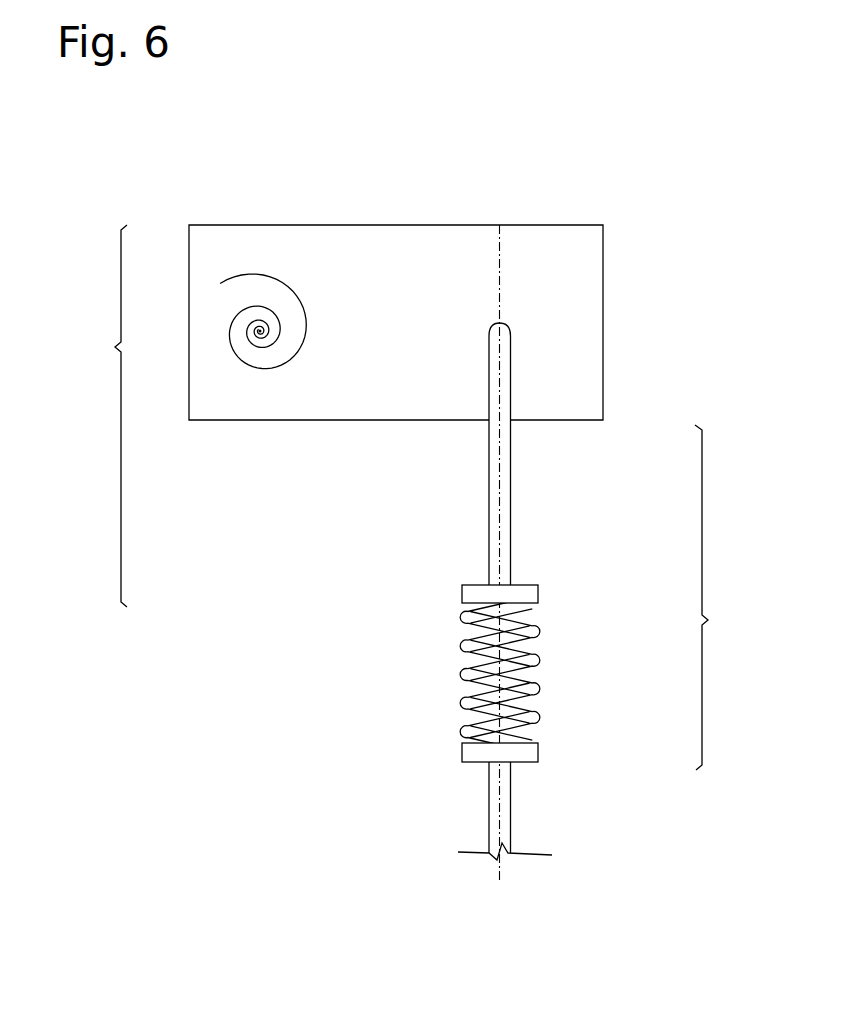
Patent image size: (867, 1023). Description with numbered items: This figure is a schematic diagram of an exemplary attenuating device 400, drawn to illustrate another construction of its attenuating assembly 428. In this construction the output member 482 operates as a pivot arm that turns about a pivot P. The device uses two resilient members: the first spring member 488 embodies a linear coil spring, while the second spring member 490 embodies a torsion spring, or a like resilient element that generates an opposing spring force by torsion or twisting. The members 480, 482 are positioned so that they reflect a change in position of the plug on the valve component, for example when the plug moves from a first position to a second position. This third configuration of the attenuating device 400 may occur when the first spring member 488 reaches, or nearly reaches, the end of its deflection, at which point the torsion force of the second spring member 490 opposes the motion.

The attenuating device 400 is at (640, 128).
The output member 482 is at (445, 224).
The second spring member 490 is at (272, 270).
The pivot P is at (260, 336).
The first spring member 488 is at (550, 672).
The attenuating assembly 428 is at (95, 416).
The member 480 is at (730, 597).